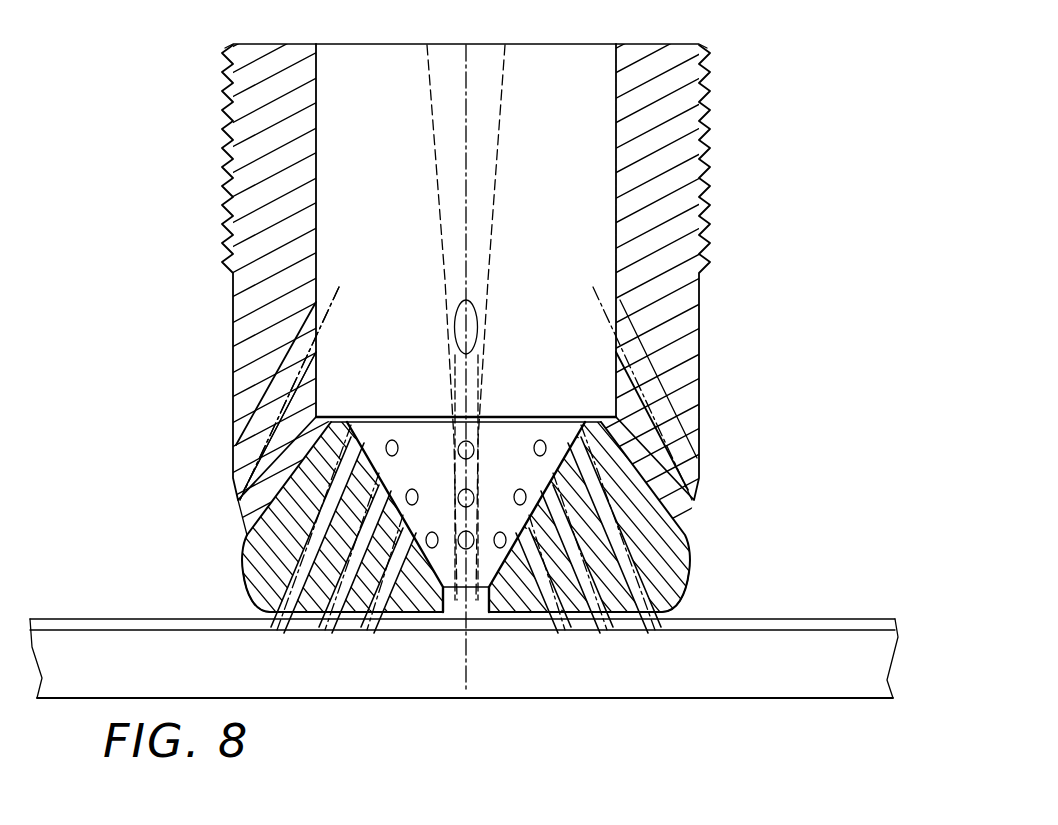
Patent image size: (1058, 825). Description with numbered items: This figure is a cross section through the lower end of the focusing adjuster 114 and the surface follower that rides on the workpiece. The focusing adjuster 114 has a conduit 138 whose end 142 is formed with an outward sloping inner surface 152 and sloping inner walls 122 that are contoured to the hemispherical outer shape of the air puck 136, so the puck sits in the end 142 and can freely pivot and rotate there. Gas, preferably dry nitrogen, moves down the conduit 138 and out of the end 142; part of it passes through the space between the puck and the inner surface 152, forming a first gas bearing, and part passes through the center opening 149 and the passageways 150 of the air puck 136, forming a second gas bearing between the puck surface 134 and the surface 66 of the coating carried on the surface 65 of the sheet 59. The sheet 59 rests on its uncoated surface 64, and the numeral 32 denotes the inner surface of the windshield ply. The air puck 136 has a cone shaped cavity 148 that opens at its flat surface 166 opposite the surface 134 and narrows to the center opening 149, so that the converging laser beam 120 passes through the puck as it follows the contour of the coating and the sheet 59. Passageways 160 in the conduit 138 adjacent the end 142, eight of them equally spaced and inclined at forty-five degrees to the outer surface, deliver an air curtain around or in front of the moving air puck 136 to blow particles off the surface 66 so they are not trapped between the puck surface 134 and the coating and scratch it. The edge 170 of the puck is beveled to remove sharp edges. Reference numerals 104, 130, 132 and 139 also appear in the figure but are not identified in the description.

The inner surface 32 is at (464, 639).
The sheet 59 is at (908, 625).
The uncoated surface 64 is at (606, 700).
The surface 65 is at (773, 633).
The surface of the coating 66 is at (752, 620).
The nozzle assembly 104 is at (491, 397).
The focusing adjuster 114 is at (712, 322).
The converging laser beam 120 is at (500, 148).
The sloping inner walls 122 is at (298, 503).
The nozzle tip 130 is at (450, 412).
The central outlet slot 132 is at (457, 614).
The surface of the air puck 134 is at (418, 614).
The air puck 136 is at (248, 612).
The conduit 138 is at (233, 322).
The rounded tip corner 139 is at (245, 604).
The end of the conduit 142 is at (262, 504).
The cone shaped cavity 148 is at (415, 433).
The center opening 149 is at (483, 614).
The passageways 150 is at (343, 614).
The inner surface 152 is at (260, 516).
The passageways 160 is at (235, 455).
The flat surface 166 is at (547, 437).
The edge 170 is at (692, 608).